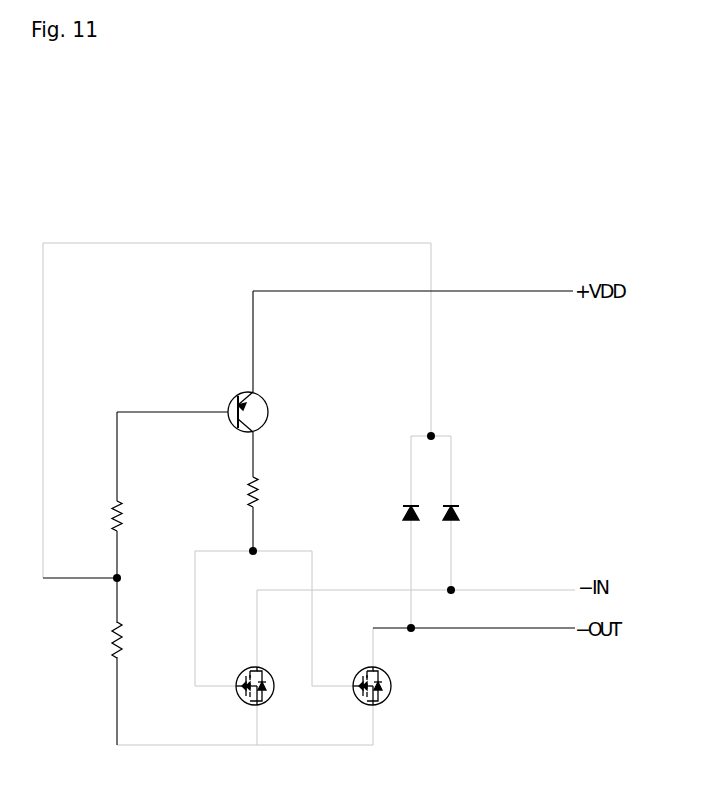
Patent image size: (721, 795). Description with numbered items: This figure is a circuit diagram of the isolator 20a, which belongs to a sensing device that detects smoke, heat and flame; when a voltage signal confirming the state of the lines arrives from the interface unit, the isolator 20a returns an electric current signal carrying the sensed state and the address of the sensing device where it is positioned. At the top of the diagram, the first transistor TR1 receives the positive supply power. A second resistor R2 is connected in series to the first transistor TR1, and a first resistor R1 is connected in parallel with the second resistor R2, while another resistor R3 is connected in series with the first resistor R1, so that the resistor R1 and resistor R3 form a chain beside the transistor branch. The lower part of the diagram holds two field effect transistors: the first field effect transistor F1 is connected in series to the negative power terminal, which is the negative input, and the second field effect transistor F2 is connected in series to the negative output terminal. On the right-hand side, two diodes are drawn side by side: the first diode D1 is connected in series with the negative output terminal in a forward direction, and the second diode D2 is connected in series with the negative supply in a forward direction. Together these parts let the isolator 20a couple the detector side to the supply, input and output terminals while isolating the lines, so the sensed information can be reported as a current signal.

The isolator 20a is at (320, 218).
The first transistor TR1 is at (268, 412).
The first resistor R1 is at (133, 516).
The second resistor R2 is at (269, 492).
The resistor R3 is at (134, 640).
The first diode D1 is at (396, 513).
The second diode D2 is at (466, 513).
The first field effect transistor F1 is at (259, 691).
The second field effect transistor F2 is at (377, 691).